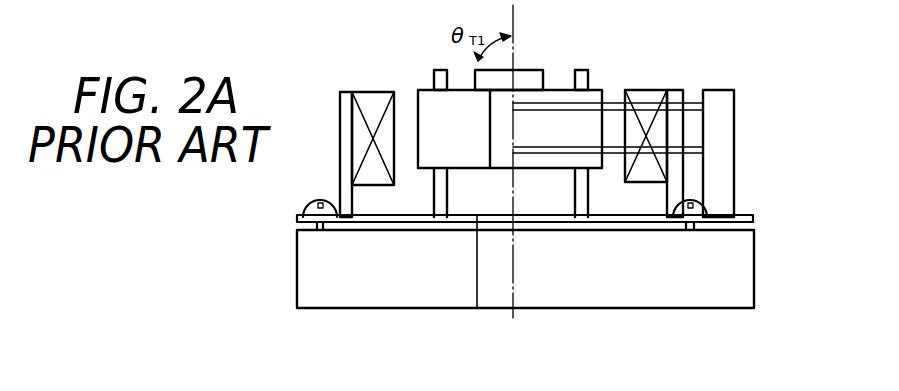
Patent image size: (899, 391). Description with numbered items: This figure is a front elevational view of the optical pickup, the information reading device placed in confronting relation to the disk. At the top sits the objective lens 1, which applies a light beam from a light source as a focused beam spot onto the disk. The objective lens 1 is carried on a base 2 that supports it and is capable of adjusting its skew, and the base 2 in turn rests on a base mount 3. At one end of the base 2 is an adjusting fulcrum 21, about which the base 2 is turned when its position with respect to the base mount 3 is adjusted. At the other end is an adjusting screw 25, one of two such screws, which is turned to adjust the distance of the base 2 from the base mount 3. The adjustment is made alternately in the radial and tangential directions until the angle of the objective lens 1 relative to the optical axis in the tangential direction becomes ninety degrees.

The objective lens 1 is at (537, 70).
The base 2 is at (746, 215).
The base mount 3 is at (754, 255).
The adjusting fulcrum 21 is at (315, 200).
The adjusting screw 25 is at (705, 205).